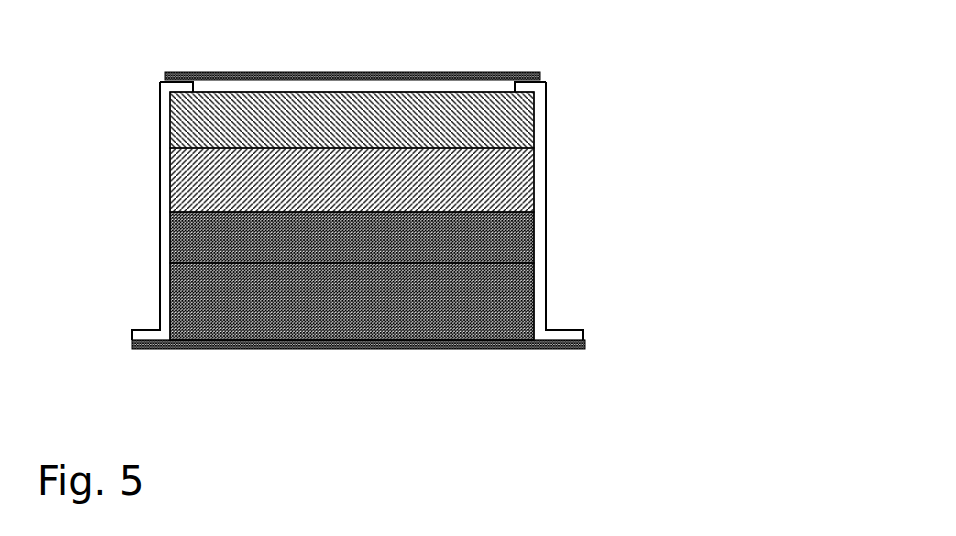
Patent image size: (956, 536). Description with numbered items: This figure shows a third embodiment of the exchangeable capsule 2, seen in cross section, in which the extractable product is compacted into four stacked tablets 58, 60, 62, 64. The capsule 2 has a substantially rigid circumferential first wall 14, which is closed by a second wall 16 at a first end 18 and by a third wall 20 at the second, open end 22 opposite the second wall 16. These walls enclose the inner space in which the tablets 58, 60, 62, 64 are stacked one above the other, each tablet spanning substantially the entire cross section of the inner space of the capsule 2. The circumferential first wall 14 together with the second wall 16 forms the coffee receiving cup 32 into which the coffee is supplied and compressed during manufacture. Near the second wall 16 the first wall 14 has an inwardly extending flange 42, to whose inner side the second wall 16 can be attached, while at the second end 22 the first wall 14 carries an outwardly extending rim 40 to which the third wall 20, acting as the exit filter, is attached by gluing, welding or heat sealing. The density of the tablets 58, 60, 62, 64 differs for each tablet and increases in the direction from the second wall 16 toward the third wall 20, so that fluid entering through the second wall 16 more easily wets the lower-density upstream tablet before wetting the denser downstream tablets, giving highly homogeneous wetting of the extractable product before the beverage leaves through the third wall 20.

The capsule 2 is at (760, 402).
The circumferential first wall 14 is at (540, 208).
The second wall 16 is at (485, 72).
The first end 18 is at (541, 103).
The third wall 20 is at (501, 346).
The second end 22 is at (541, 310).
The coffee receiving cup 32 is at (157, 98).
The outwardly extending rim 40 is at (568, 340).
The inwardly extending flange 42 is at (537, 73).
The tablet 58 is at (176, 127).
The tablet 60 is at (178, 188).
The tablet 62 is at (180, 249).
The tablet 64 is at (186, 298).